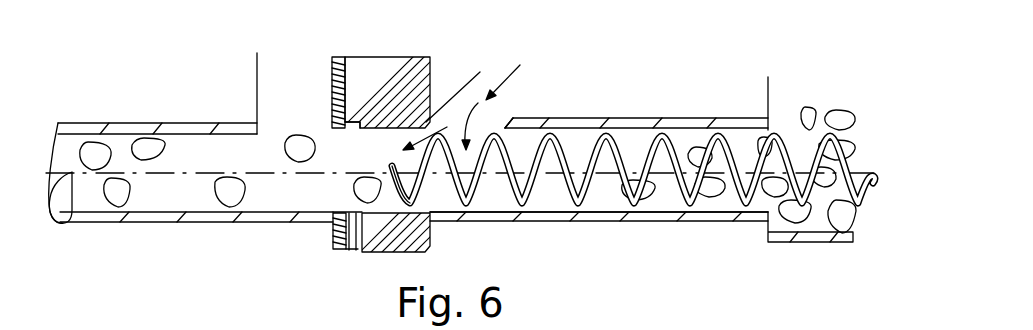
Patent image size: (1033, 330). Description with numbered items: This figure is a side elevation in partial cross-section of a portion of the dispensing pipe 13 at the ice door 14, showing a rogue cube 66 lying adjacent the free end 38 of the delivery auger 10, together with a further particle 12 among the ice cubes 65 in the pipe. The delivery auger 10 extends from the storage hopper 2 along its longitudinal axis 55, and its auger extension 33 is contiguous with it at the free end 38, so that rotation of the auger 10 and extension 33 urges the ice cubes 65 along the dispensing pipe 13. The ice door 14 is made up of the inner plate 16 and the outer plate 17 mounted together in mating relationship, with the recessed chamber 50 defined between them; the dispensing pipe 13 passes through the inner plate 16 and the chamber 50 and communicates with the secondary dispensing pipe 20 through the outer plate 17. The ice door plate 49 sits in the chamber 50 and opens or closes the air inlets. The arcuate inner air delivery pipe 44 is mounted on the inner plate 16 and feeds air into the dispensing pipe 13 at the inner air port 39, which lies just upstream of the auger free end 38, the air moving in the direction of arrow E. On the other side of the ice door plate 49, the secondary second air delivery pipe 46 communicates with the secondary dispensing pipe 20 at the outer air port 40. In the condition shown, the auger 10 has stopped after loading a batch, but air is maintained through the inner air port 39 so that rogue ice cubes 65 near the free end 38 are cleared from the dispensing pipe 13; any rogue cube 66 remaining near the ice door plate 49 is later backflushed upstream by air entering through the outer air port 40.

The storage hopper 2 is at (763, 93).
The delivery auger 10 is at (851, 158).
The granular particle 12 is at (773, 130).
The dispensing pipe 13 is at (522, 217).
The ice door 14 is at (393, 58).
The ice door inner plate 16 is at (423, 88).
The ice door outer plate 17 is at (337, 88).
The secondary dispensing pipe 20 is at (242, 224).
The auger extension 33 is at (690, 198).
The auger free end 38 is at (392, 166).
The inner air port 39 is at (495, 128).
The outer air port 40 is at (273, 126).
The inner air delivery pipe 44 is at (560, 68).
The secondary second air delivery pipe 46 is at (258, 76).
The ice door plate 49 is at (342, 249).
The chamber 50 is at (352, 143).
The longitudinal axis 55 is at (562, 214).
The ice cubes 65 is at (836, 112).
The rogue cube 66 is at (352, 188).
The arrow E is at (468, 107).